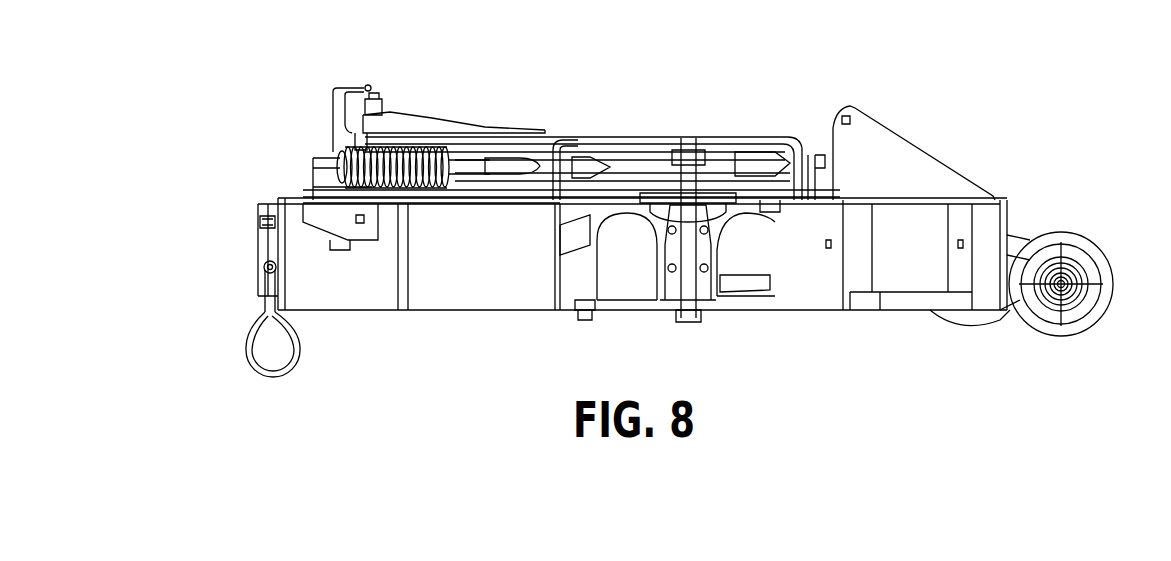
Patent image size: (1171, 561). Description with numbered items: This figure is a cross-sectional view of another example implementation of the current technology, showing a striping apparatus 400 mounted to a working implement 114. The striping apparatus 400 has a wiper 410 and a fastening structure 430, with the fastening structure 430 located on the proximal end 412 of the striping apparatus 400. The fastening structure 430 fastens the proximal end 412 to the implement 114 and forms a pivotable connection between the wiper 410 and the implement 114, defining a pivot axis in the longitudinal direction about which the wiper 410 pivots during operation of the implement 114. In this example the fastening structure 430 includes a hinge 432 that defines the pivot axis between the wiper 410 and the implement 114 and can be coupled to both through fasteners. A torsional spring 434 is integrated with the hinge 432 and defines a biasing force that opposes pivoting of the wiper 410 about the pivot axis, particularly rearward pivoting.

The working implement 114 is at (480, 70).
The striping apparatus 400 is at (238, 277).
The wiper 410 is at (251, 338).
The proximal end 412 is at (265, 280).
The fastening structure 430 is at (260, 225).
The hinge 432 is at (265, 262).
The torsional spring 434 is at (252, 240).